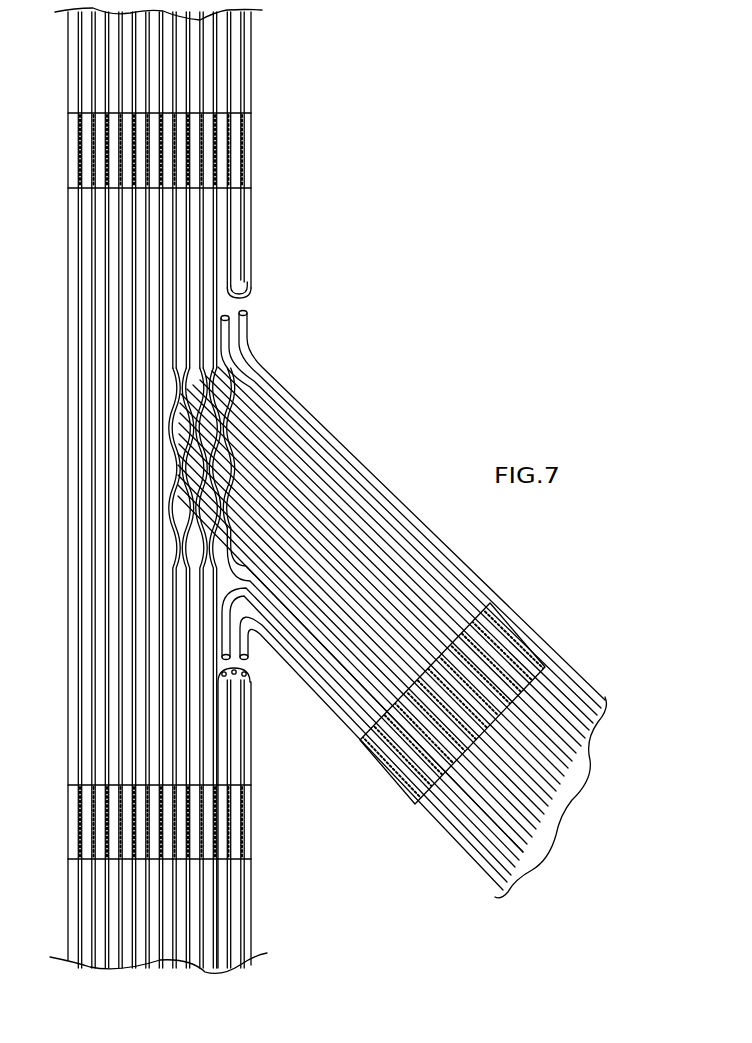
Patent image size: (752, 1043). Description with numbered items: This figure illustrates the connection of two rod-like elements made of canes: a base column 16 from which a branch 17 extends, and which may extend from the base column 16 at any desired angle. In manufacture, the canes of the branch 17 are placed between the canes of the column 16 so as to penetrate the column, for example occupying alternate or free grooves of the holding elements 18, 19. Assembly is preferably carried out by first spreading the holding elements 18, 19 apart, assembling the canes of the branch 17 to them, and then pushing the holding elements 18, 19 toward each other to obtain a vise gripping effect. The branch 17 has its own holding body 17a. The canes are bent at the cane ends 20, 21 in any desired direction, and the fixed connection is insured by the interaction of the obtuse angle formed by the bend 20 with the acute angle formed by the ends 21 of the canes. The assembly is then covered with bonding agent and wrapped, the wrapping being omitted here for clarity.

The base column 16 is at (217, 48).
The branch 17 is at (348, 495).
The holding body 17a is at (532, 640).
The holding element 18 is at (232, 152).
The holding element 19 is at (223, 830).
The cane end 20 is at (243, 338).
The cane end 21 is at (242, 640).